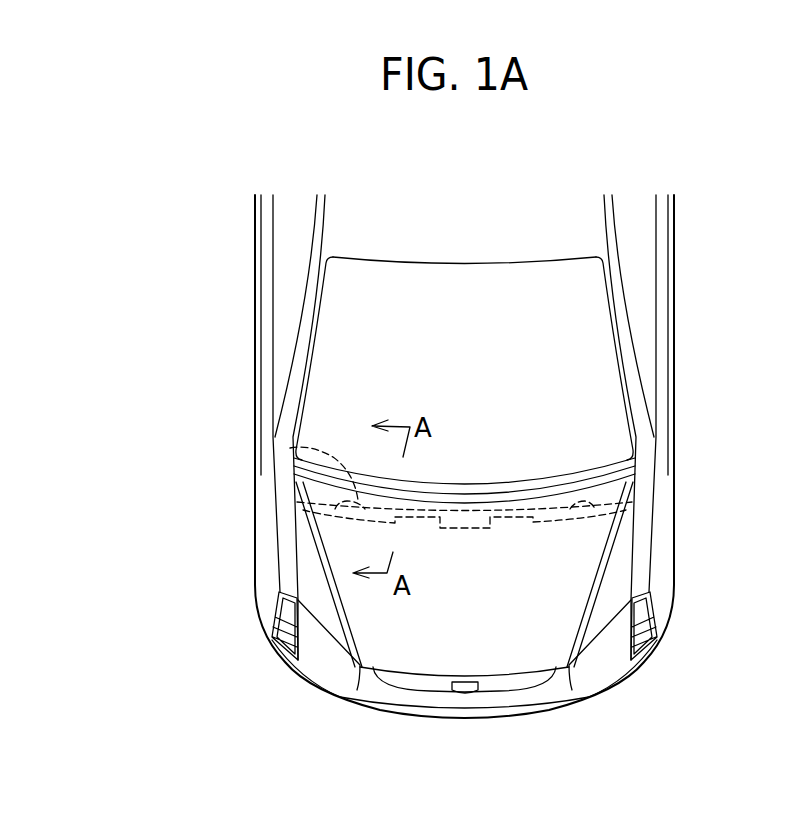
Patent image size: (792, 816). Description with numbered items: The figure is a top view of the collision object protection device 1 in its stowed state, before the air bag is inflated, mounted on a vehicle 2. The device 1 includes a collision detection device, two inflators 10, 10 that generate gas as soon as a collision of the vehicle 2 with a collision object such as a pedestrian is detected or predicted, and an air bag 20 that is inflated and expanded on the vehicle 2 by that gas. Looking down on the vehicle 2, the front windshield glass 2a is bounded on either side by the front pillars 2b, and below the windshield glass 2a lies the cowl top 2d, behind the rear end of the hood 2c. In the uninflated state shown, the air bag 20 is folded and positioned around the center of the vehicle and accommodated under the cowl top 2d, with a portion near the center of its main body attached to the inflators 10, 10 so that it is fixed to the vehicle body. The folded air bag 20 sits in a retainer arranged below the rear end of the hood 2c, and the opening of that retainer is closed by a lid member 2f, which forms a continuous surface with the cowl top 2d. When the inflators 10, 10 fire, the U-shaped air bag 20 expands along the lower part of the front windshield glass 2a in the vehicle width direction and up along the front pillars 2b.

The collision object protection device 1 is at (508, 546).
The vehicle 2 is at (693, 238).
The front windshield glass 2a is at (483, 345).
The front pillars 2b is at (298, 380).
The hood 2c is at (442, 657).
The cowl top 2d is at (583, 477).
The lid member 2f is at (459, 503).
The inflators 10 is at (422, 525).
The air bag 20 is at (290, 448).